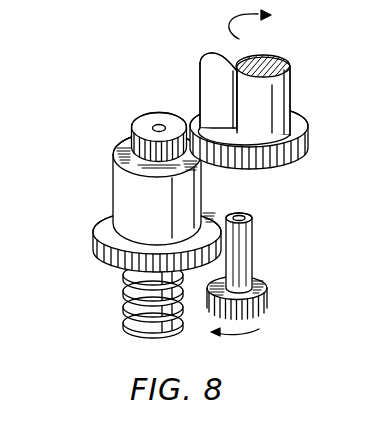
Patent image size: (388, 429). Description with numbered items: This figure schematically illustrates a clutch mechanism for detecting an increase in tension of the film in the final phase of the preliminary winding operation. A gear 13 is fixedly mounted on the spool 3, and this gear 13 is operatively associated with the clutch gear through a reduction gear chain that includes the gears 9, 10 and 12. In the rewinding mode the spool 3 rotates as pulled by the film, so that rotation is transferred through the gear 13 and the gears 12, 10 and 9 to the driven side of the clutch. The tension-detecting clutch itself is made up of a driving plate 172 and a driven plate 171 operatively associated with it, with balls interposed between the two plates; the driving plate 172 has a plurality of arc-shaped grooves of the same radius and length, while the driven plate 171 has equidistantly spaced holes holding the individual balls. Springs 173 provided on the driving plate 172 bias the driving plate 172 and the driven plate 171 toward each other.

The spool 3 is at (280, 97).
The gear 9 is at (264, 280).
The gear 10 is at (245, 245).
The gear 12 is at (143, 117).
The gear 13 is at (305, 152).
The driven plate 171 is at (112, 172).
The driving plate 172 is at (75, 248).
The springs 173 is at (181, 313).